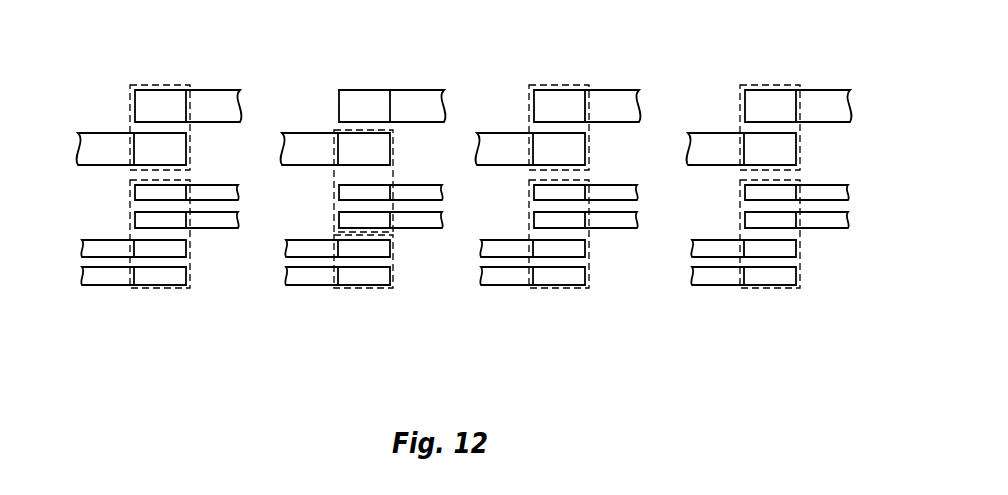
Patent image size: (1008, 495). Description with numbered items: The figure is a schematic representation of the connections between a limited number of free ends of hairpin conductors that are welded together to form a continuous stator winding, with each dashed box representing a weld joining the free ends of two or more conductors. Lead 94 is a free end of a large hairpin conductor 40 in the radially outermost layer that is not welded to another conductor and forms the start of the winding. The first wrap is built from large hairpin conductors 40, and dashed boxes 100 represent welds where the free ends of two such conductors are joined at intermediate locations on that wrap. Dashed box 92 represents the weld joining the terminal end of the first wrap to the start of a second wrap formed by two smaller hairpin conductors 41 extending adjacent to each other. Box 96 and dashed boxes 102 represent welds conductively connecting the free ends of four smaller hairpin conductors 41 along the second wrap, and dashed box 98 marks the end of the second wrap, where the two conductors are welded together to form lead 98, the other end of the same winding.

The hairpin conductor 40 is at (308, 143).
The hairpin conductor 41 is at (407, 222).
The dashed box 92 is at (335, 148).
The lead 94 is at (365, 103).
The box 96 is at (590, 267).
The lead 98 is at (362, 290).
The dashed boxes 100 is at (130, 118).
The dashed boxes 102 is at (130, 201).